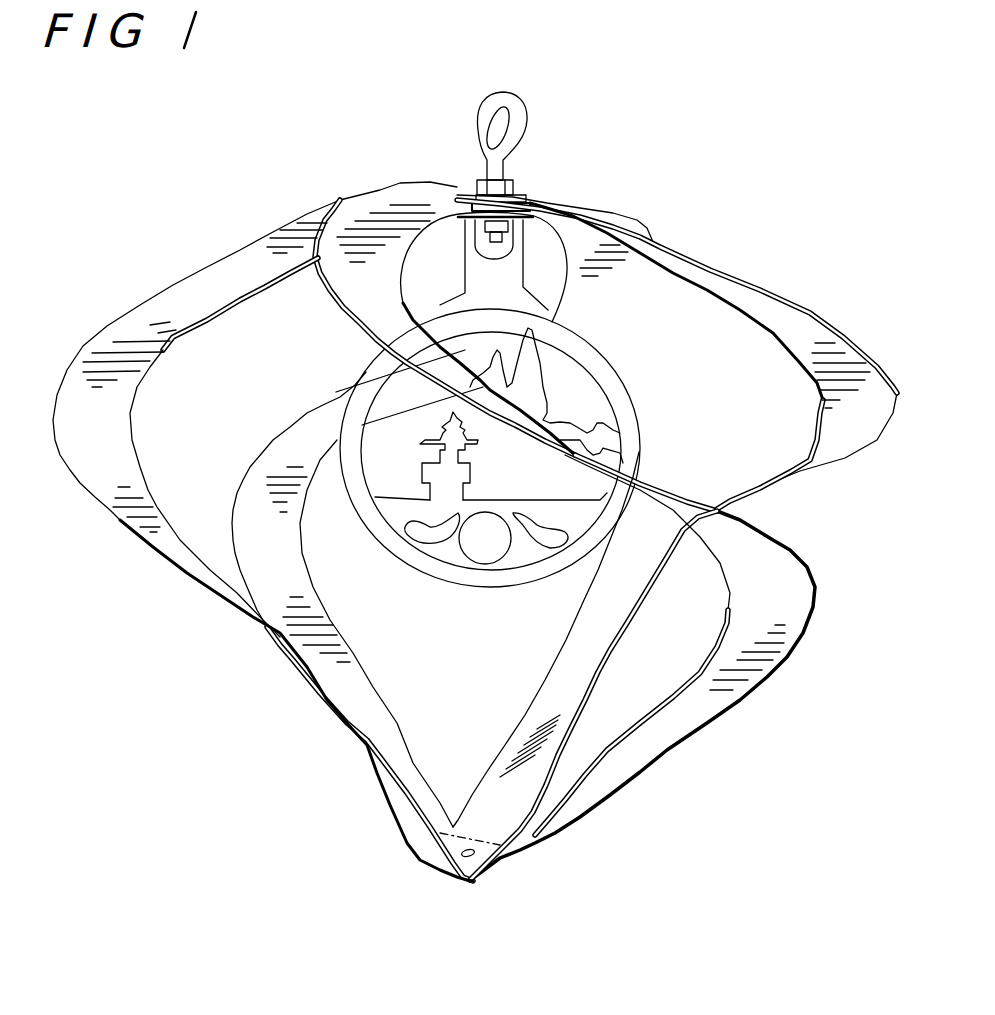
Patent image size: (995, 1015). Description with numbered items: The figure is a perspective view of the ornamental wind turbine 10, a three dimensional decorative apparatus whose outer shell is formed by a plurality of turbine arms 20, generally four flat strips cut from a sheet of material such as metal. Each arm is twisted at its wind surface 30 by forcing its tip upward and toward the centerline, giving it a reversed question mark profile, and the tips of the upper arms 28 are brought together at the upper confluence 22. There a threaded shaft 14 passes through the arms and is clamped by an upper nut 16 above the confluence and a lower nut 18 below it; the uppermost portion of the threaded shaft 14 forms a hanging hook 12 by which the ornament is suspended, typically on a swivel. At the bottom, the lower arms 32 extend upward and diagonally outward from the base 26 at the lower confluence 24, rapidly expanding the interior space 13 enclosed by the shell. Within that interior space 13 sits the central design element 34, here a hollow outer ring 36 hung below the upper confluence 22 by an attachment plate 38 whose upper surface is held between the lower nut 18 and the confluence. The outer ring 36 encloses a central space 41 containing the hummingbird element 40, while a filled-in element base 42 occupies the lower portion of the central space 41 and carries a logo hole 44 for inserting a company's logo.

The ornamental wind turbine 10 is at (173, 243).
The hanging hook 12 is at (480, 103).
The interior space 13 is at (193, 370).
The threaded shaft 14 is at (487, 160).
The upper nut 16 is at (518, 181).
The lower nut 18 is at (534, 204).
The turbine arms 20 is at (335, 200).
The upper confluence 22 is at (460, 187).
The lower confluence 24 is at (472, 883).
The base 26 is at (462, 860).
The upper arms 28 is at (653, 227).
The wind surface 30 is at (810, 570).
The lower arms 32 is at (390, 792).
The central design element 34 is at (647, 363).
The outer ring 36 is at (628, 386).
The attachment plate 38 is at (463, 267).
The hummingbird element 40 is at (557, 392).
The central space 41 is at (408, 480).
The element base 42 is at (447, 547).
The logo hole 44 is at (483, 563).